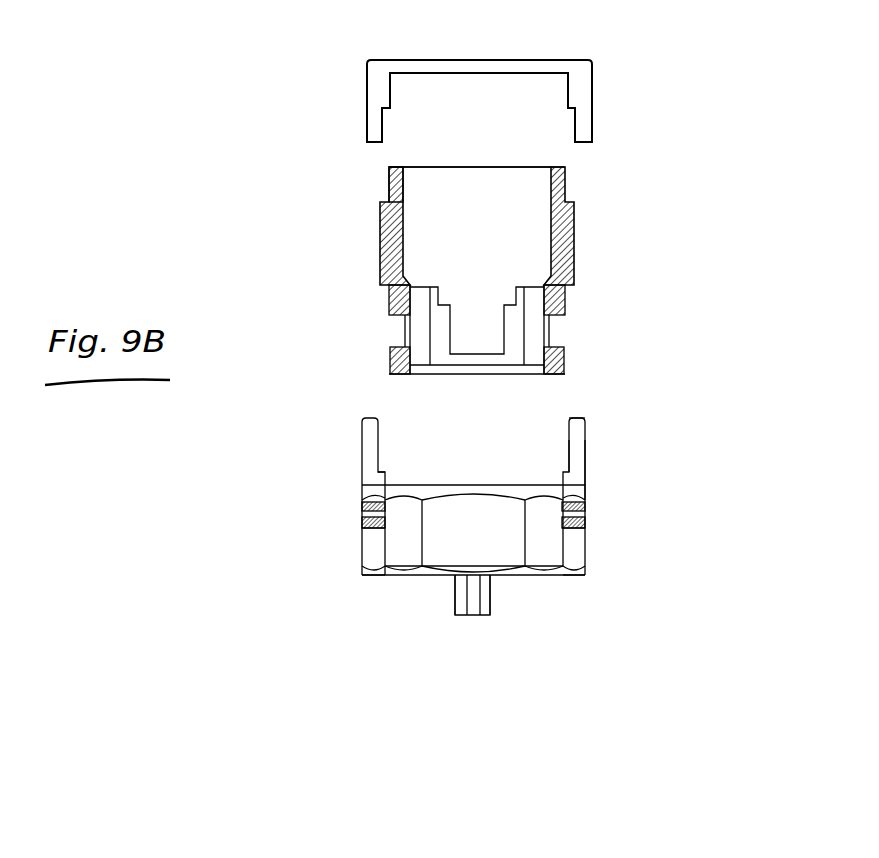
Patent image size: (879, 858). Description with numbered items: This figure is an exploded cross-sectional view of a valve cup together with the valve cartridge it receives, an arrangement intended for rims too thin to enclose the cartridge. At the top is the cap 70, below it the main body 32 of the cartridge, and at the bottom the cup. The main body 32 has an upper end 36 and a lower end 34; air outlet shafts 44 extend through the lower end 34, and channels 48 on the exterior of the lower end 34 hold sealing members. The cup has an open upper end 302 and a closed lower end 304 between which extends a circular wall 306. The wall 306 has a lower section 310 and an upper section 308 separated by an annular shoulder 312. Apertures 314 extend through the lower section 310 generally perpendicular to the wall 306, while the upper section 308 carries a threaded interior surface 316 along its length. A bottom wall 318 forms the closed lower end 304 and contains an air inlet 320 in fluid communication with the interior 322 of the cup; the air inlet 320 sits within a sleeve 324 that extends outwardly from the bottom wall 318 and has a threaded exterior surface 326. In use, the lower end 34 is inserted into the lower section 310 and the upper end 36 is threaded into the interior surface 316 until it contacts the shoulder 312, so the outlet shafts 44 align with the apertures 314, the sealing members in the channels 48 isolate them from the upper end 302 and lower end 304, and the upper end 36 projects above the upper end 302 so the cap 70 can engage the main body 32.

The cap 70 is at (365, 88).
The upper end 36 is at (385, 188).
The main body 32 is at (374, 249).
The air outlet shafts 44 is at (405, 327).
The lower end 34 is at (395, 348).
The channels 48 is at (560, 298).
The open upper end 302 is at (404, 423).
The closed lower end 304 is at (566, 585).
The circular wall 306 is at (593, 472).
The upper section 308 is at (580, 432).
The lower section 310 is at (370, 493).
The annular shoulder 312 is at (375, 470).
The apertures 314 is at (352, 519).
The threaded interior surface 316 is at (573, 445).
The bottom wall 318 is at (378, 578).
The air inlet 320 is at (470, 608).
The interior 322 is at (481, 529).
The sleeve 324 is at (457, 595).
The threaded exterior surface 326 is at (492, 595).